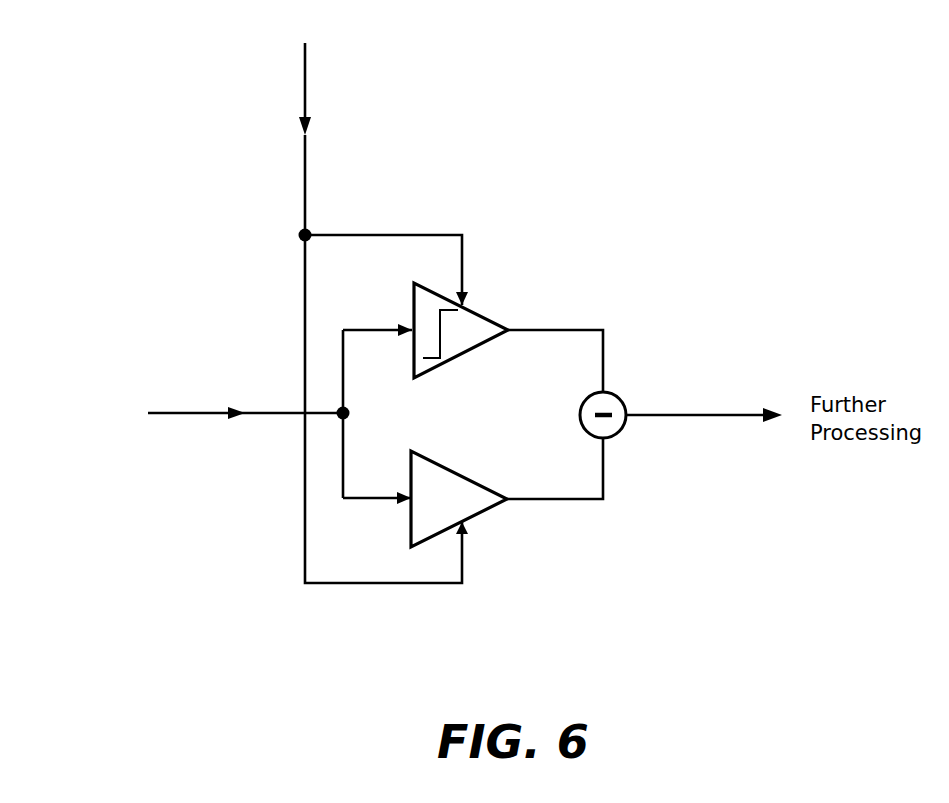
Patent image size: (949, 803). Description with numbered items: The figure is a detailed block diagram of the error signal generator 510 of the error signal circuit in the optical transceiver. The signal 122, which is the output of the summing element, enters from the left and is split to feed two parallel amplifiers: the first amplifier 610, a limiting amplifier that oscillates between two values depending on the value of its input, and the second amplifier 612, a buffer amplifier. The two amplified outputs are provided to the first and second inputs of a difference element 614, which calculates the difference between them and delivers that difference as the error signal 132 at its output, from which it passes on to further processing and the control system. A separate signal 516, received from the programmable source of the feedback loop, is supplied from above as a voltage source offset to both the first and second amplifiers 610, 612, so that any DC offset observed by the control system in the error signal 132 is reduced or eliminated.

The error signal generator 510 is at (262, 102).
The output signal of the programmable source 516 is at (305, 82).
The output of summing element 122 is at (196, 412).
The first amplifier 610 is at (478, 327).
The second amplifier 612 is at (465, 497).
The difference element 614 is at (605, 395).
The error signal 132 is at (703, 412).